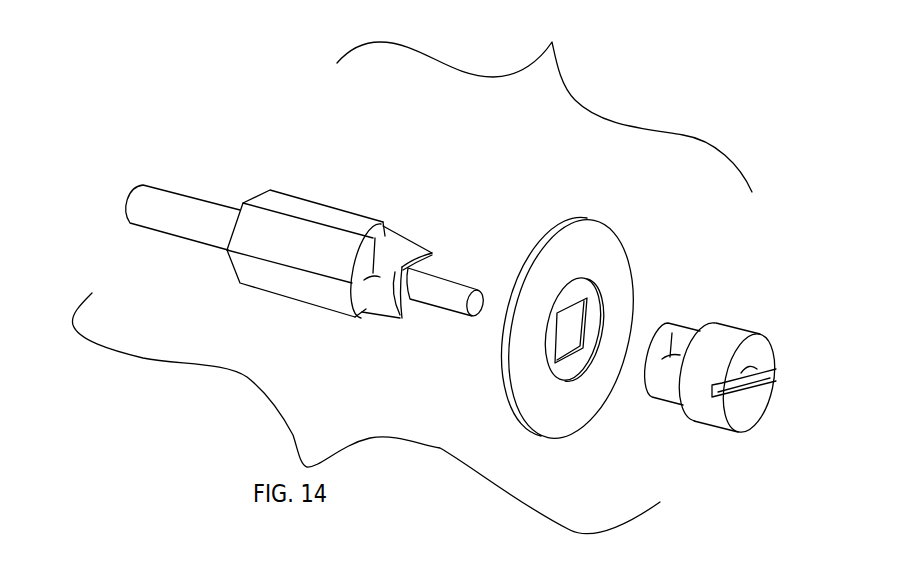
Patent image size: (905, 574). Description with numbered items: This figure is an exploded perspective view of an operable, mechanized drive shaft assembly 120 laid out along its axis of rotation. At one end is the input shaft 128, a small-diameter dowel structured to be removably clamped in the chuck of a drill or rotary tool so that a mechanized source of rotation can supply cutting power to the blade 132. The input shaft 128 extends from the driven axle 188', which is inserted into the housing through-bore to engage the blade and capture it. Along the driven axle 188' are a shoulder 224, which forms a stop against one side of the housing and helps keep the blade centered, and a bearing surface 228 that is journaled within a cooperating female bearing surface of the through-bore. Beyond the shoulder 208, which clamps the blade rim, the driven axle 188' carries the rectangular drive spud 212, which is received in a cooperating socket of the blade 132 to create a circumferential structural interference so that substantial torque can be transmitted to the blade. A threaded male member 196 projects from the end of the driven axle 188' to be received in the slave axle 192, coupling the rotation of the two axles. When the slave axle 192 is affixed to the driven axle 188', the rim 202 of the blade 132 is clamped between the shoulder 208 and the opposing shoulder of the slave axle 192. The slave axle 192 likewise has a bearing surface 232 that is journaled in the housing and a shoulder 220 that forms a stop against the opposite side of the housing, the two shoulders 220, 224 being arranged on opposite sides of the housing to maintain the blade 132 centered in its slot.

The drive shaft assembly 120 is at (412, 272).
The input shaft 128 is at (178, 213).
The driven axle 188' is at (306, 213).
The bearing surface 228 is at (386, 222).
The shoulder 224 is at (362, 312).
The shoulder 208 is at (432, 253).
The drive spud 212 is at (412, 315).
The threaded male member 196 is at (450, 290).
The blade 132 is at (593, 255).
The rim 202 is at (570, 367).
The bearing surface 232 is at (672, 333).
The slave axle 192 is at (720, 347).
The shoulder 220 is at (683, 407).